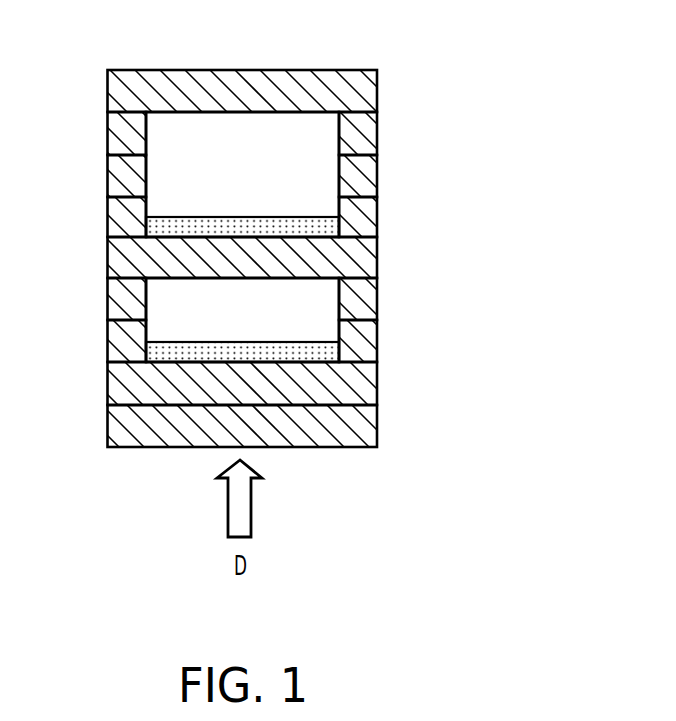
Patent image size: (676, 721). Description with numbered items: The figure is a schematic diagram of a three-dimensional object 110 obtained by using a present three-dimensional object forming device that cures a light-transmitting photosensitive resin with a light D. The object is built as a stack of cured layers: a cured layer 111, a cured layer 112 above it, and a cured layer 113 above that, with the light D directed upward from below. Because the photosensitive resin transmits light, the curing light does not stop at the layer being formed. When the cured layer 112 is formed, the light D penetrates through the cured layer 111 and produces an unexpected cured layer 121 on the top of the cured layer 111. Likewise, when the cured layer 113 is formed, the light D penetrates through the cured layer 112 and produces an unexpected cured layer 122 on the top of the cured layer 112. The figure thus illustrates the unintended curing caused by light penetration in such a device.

The 3D object 110 is at (257, 227).
The cured layer 111 is at (127, 258).
The cured layer 112 is at (125, 383).
The cured layer 113 is at (125, 428).
The unexpected cured layer 121 is at (330, 228).
The unexpected cured layer 122 is at (330, 353).